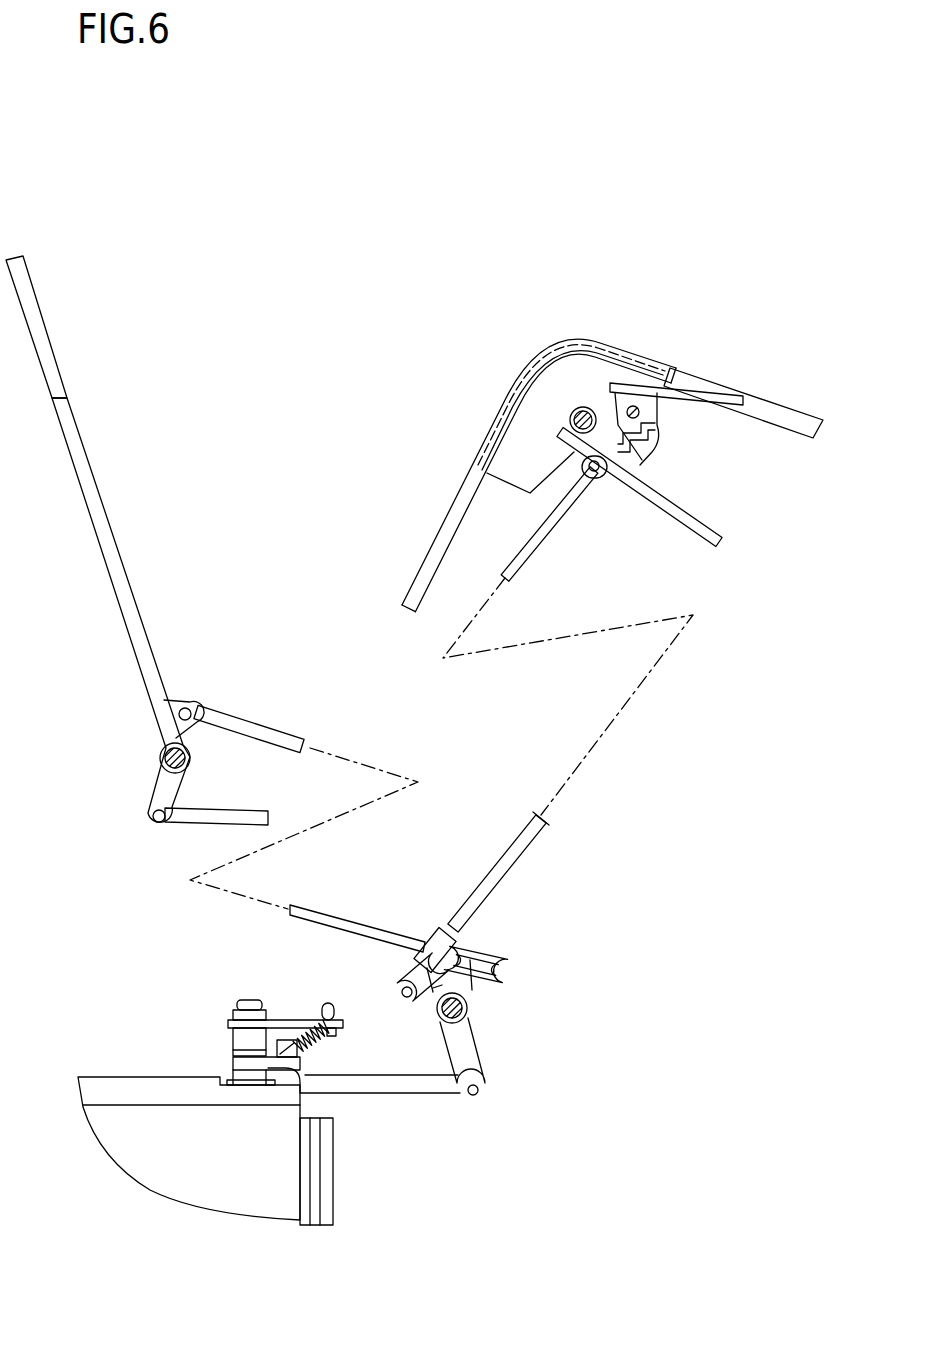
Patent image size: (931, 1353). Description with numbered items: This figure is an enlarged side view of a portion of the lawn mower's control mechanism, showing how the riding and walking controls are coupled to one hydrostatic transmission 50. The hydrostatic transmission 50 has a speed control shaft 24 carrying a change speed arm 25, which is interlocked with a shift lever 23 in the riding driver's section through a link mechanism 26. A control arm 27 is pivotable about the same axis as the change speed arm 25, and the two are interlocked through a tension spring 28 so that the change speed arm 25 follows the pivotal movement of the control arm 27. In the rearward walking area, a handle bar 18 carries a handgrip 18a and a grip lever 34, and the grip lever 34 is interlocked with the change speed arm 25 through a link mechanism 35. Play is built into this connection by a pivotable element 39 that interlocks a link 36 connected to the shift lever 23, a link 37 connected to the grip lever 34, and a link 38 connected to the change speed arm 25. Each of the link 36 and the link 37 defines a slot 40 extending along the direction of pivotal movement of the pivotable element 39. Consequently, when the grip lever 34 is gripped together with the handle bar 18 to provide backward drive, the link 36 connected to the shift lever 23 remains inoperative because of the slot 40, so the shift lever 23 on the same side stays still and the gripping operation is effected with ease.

The handle bar 18 is at (462, 480).
The handgrip 18a is at (760, 392).
The shift lever 23 is at (58, 358).
The speed control shaft 24 is at (245, 997).
The change speed arm 25 is at (262, 1073).
The link mechanism 26 is at (281, 742).
The control arm 27 is at (288, 1020).
The tension spring 28 is at (323, 1038).
The grip lever 34 is at (685, 512).
The link mechanism 35 is at (541, 838).
The link 36 is at (507, 977).
The link 37 is at (433, 925).
The link 38 is at (418, 1094).
The pivotable element 39 is at (470, 1015).
The slot 40 is at (507, 963).
The hydrostatic transmission 50 is at (118, 1077).